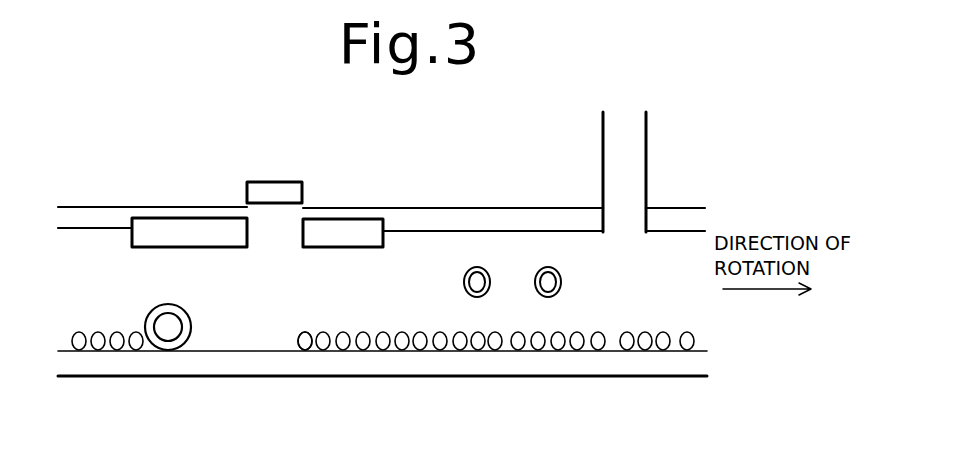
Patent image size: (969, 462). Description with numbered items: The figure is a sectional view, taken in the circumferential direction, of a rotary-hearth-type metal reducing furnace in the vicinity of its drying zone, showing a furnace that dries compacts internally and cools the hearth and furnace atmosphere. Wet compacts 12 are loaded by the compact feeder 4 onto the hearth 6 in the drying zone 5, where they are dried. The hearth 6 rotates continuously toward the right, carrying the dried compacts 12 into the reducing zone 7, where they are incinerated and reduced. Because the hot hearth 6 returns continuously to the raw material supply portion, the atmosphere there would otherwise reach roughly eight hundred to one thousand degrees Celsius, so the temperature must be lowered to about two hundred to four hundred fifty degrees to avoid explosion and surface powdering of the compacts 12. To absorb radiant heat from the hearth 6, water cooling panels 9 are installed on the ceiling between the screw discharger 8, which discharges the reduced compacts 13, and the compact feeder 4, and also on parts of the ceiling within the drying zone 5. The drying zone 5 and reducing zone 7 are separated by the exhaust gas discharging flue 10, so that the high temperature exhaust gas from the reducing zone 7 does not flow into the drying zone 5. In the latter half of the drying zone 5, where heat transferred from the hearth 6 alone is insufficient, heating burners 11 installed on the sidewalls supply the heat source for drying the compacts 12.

The compact feeder 4 is at (283, 187).
The drying zone 5 is at (408, 302).
The hearth 6 is at (538, 377).
The reducing zone 7 is at (700, 302).
The screw discharger 8 is at (175, 340).
The water cooling panels 9 is at (207, 227).
The exhaust gas discharging flue 10 is at (623, 188).
The heating burners 11 is at (476, 278).
The compacts 12 is at (305, 351).
The reduced compacts 13 is at (79, 351).